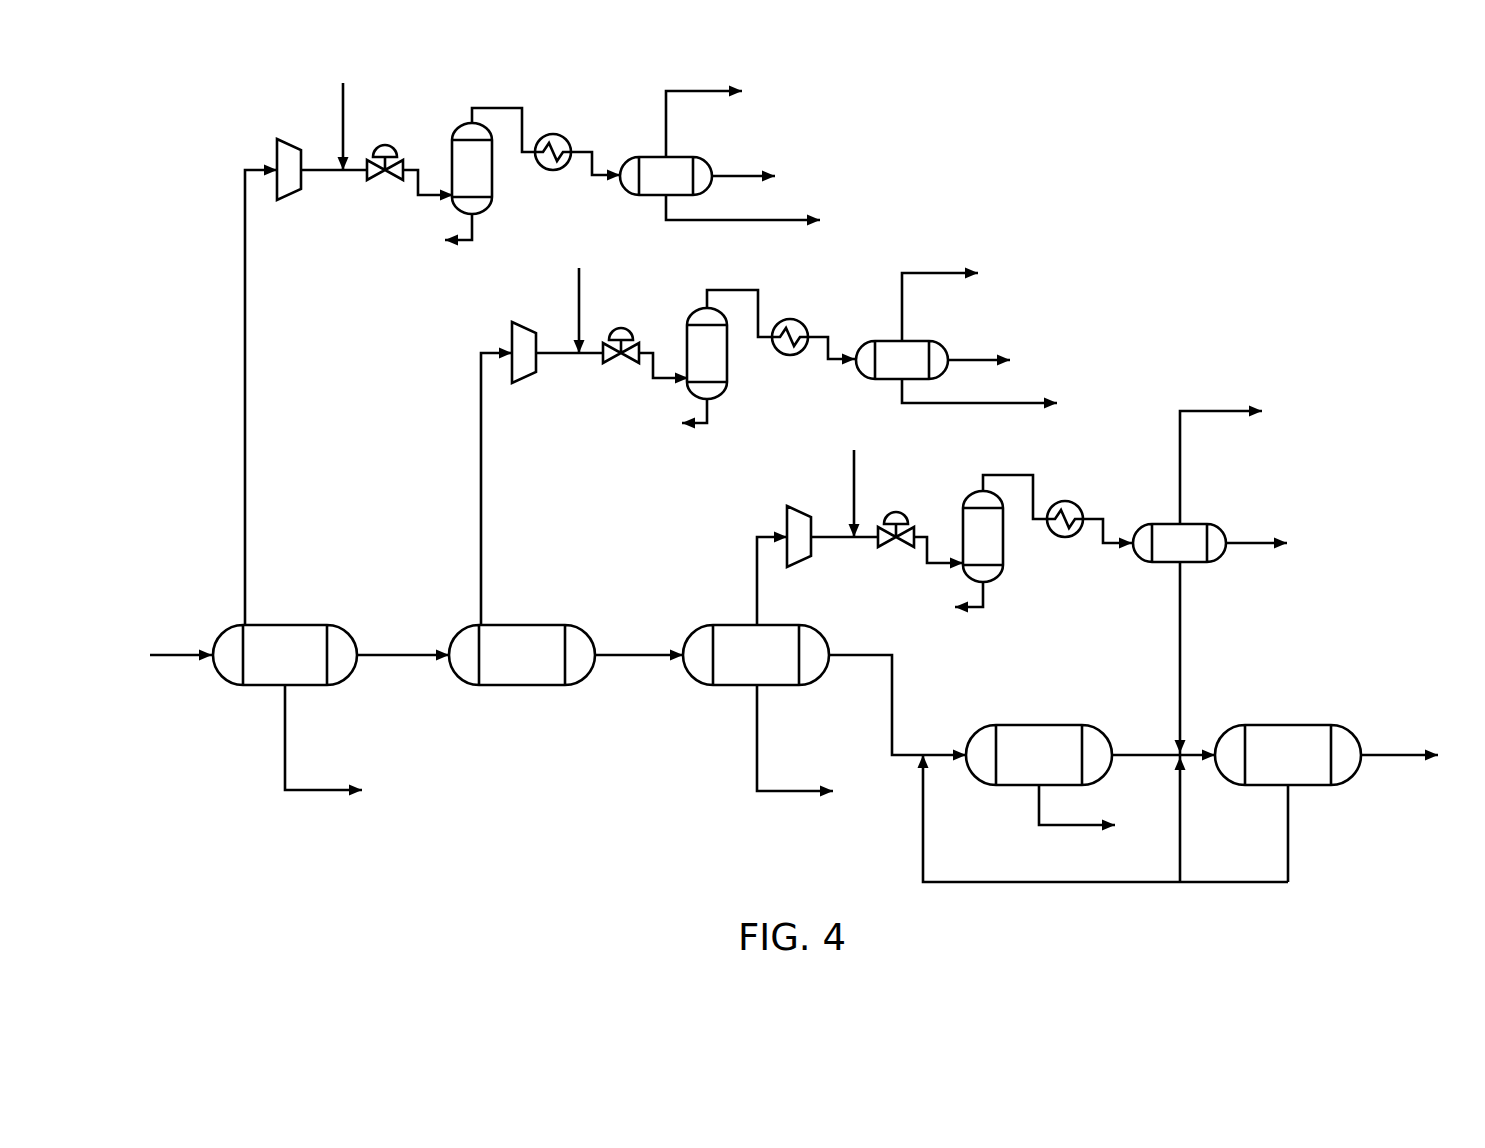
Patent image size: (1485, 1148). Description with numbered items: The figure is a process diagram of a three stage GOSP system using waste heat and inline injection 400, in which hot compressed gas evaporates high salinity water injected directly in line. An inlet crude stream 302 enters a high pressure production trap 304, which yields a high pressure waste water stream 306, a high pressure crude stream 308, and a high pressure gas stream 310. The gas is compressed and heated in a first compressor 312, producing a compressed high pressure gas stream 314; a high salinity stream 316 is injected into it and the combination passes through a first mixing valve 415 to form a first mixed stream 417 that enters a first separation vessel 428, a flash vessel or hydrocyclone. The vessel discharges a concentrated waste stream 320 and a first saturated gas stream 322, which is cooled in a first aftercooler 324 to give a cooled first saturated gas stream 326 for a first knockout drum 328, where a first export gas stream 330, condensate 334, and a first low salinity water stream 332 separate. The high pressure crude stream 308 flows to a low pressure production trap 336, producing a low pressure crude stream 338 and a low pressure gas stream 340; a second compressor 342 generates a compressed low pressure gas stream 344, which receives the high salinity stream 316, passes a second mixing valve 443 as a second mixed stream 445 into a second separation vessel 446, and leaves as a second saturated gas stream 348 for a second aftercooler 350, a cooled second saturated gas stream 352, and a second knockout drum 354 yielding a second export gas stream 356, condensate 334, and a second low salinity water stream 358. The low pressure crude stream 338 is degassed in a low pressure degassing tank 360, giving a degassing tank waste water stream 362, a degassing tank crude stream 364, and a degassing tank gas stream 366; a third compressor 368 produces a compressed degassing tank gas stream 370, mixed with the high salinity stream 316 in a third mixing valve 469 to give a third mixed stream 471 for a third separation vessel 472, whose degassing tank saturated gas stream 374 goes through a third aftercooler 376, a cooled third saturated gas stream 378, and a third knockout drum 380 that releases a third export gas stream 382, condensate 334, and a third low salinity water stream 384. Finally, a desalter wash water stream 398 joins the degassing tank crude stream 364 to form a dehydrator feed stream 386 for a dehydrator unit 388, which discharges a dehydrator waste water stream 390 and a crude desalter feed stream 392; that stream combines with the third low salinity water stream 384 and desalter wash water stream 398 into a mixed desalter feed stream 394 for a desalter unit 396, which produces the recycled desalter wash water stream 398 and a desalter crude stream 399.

The three stage GOSP system using waste heat and inline injection 400 is at (1242, 103).
The inlet crude stream 302 is at (185, 652).
The high pressure production trap 304 is at (272, 687).
The high pressure waste water stream 306 is at (285, 768).
The high pressure crude stream 308 is at (410, 652).
The high pressure gas stream 310 is at (245, 513).
The first compressor 312 is at (277, 150).
The compressed high pressure gas stream 314 is at (325, 168).
The high salinity stream 316 is at (343, 92).
The waste stream 320 is at (465, 242).
The first saturated gas stream 322 is at (517, 107).
The first aftercooler 324 is at (557, 133).
The cooled first saturated gas stream 326 is at (582, 150).
The first knockout drum 328 is at (683, 155).
The first export gas stream 330 is at (700, 90).
The first low salinity water stream 332 is at (705, 218).
The condensate 334 is at (733, 175).
The low pressure production trap 336 is at (507, 687).
The low pressure crude stream 338 is at (647, 650).
The low pressure gas stream 340 is at (481, 383).
The second compressor 342 is at (512, 335).
The compressed low pressure gas stream 344 is at (560, 352).
The second saturated gas stream 348 is at (750, 290).
The second aftercooler 350 is at (793, 317).
The cooled second saturated gas stream 352 is at (818, 332).
The second knockout drum 354 is at (918, 338).
The second export gas stream 356 is at (937, 273).
The second low salinity water stream 358 is at (940, 402).
The low pressure degassing tank 360 is at (742, 687).
The degassing tank waste water stream 362 is at (757, 775).
The degassing tank crude stream 364 is at (892, 713).
The degassing tank gas stream 366 is at (757, 567).
The third compressor 368 is at (787, 520).
The compressed degassing tank gas stream 370 is at (837, 535).
The degassing tank saturated gas stream 374 is at (1025, 473).
The third aftercooler 376 is at (1068, 500).
The cooled third saturated gas stream 378 is at (1093, 517).
The third knockout drum 380 is at (1193, 523).
The third export gas stream 382 is at (1222, 410).
The third low salinity water stream 384 is at (1180, 602).
The dehydrator feed stream 386 is at (935, 750).
The dehydrator unit 388 is at (1025, 788).
The dehydrator waste water stream 390 is at (1073, 828).
The crude desalter feed stream 392 is at (1130, 750).
The mixed desalter feed stream 394 is at (1193, 750).
The desalter unit 396 is at (1273, 788).
The desalter wash water stream 398 is at (922, 828).
The desalter crude stream 399 is at (1390, 753).
The first mixing valve 415 is at (380, 180).
The first mixed stream 417 is at (435, 198).
The first separation vessel 428 is at (493, 193).
The second mixing valve 443 is at (618, 362).
The second mixed stream 445 is at (670, 383).
The second separation vessel 446 is at (728, 373).
The third mixing valve 469 is at (893, 545).
The third mixed stream 471 is at (945, 567).
The third separation vessel 472 is at (1003, 558).